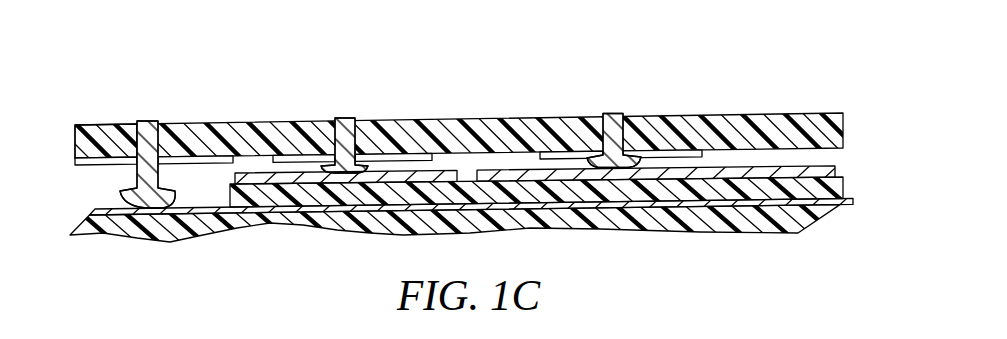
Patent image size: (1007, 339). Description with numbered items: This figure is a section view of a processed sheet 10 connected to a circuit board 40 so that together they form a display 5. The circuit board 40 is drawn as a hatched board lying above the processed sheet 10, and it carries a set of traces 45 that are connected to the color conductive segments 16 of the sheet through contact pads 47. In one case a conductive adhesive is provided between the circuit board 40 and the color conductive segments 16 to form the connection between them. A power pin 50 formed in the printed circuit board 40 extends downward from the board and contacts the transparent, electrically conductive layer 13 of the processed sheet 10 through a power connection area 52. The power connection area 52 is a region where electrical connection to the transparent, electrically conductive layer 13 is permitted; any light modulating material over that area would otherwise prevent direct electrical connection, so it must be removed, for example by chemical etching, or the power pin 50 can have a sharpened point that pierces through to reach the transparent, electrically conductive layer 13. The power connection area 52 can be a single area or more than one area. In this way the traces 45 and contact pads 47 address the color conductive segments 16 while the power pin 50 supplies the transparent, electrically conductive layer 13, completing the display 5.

The display 5 is at (462, 118).
The processed sheet 10 is at (475, 226).
The transparent, electrically conductive layer 13 is at (284, 220).
The color conductive segments 16 is at (449, 155).
The circuit board 40 is at (112, 131).
The traces 45 is at (114, 164).
The contact pads 47 is at (346, 118).
The power pin 50 is at (148, 121).
The power connection area 52 is at (204, 190).